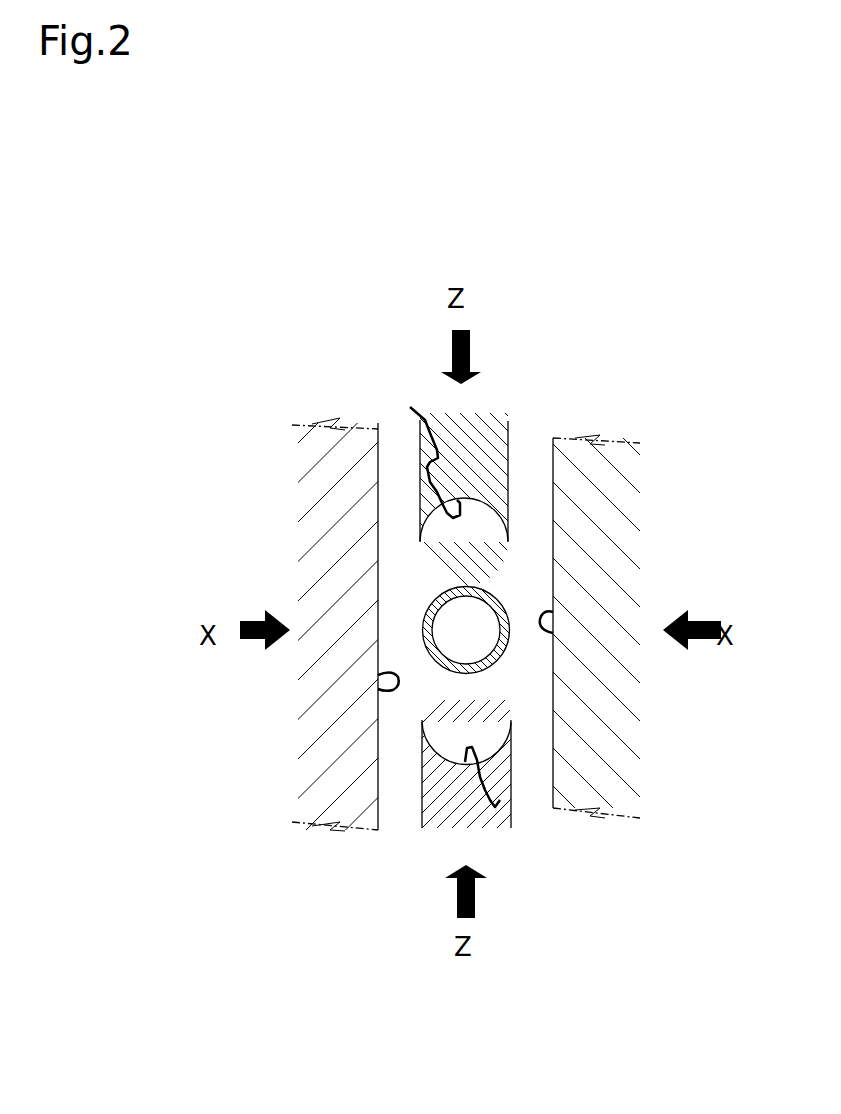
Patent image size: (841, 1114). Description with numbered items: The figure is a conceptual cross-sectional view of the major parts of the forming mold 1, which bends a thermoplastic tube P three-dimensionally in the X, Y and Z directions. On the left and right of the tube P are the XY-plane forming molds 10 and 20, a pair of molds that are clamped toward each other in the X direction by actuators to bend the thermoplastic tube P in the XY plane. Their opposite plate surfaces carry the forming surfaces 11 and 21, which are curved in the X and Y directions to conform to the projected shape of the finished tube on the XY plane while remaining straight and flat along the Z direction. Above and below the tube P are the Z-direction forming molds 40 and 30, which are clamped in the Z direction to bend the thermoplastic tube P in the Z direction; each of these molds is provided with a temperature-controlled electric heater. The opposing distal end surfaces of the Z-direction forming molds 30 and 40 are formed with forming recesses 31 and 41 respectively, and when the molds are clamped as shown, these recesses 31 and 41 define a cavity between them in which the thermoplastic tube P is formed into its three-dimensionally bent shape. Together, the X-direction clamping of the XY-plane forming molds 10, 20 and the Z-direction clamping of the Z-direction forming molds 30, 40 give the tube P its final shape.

The forming mold 1 is at (322, 392).
The XY-plane forming mold 10 is at (341, 552).
The forming surface 11 is at (378, 684).
The XY-plane forming mold 20 is at (603, 565).
The forming surface 21 is at (553, 633).
The Z-direction forming mold 30 is at (445, 806).
The forming recess 31 is at (500, 800).
The Z-direction forming mold 40 is at (488, 433).
The forming recess 41 is at (410, 407).
The thermoplastic tube P is at (497, 657).